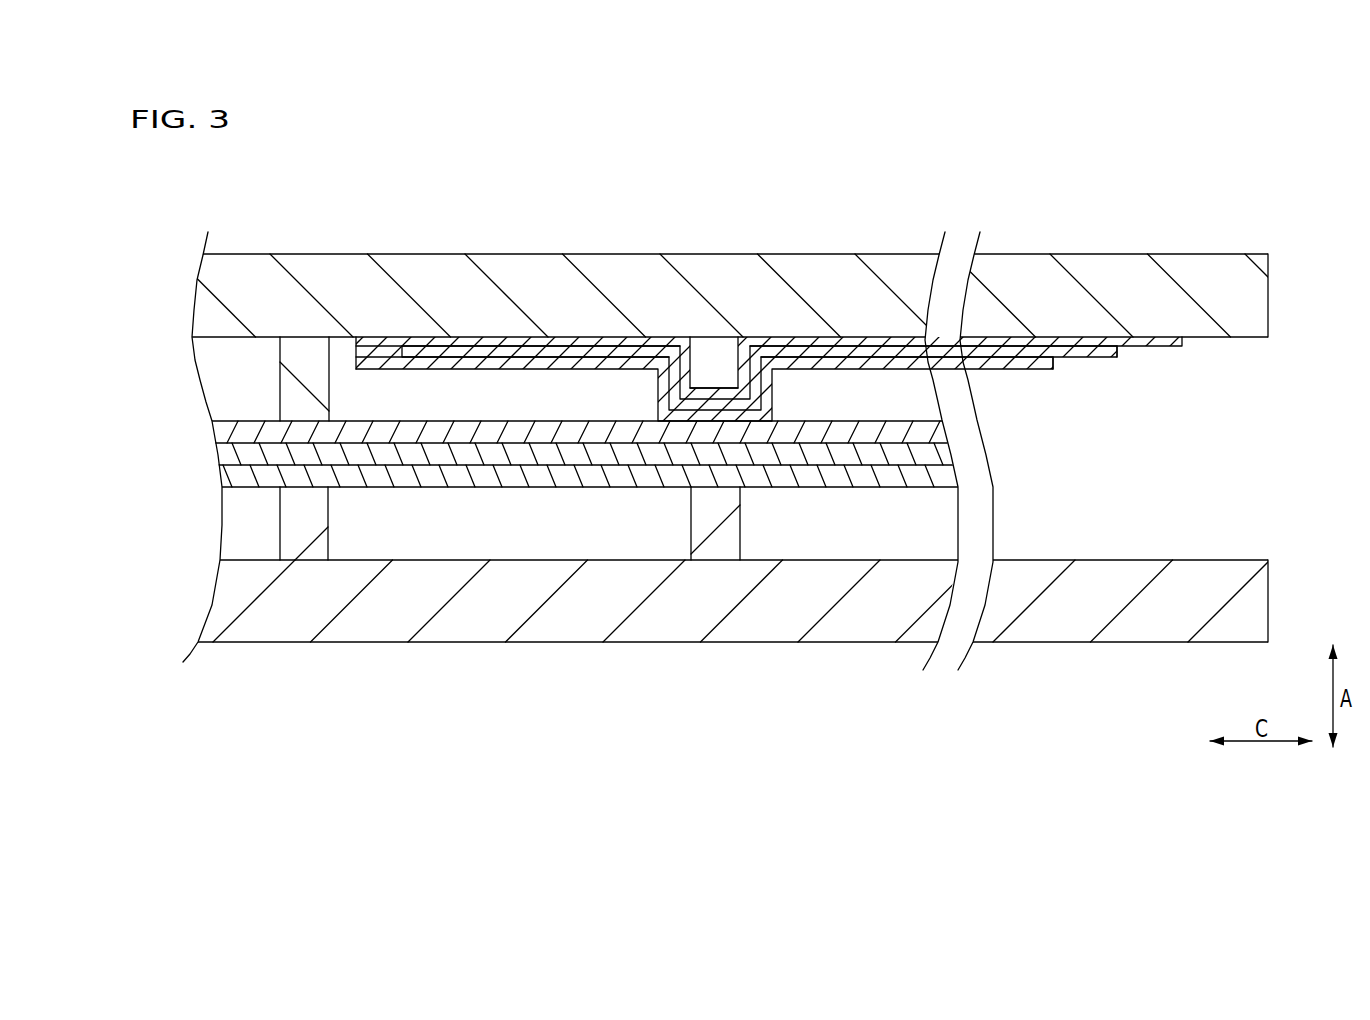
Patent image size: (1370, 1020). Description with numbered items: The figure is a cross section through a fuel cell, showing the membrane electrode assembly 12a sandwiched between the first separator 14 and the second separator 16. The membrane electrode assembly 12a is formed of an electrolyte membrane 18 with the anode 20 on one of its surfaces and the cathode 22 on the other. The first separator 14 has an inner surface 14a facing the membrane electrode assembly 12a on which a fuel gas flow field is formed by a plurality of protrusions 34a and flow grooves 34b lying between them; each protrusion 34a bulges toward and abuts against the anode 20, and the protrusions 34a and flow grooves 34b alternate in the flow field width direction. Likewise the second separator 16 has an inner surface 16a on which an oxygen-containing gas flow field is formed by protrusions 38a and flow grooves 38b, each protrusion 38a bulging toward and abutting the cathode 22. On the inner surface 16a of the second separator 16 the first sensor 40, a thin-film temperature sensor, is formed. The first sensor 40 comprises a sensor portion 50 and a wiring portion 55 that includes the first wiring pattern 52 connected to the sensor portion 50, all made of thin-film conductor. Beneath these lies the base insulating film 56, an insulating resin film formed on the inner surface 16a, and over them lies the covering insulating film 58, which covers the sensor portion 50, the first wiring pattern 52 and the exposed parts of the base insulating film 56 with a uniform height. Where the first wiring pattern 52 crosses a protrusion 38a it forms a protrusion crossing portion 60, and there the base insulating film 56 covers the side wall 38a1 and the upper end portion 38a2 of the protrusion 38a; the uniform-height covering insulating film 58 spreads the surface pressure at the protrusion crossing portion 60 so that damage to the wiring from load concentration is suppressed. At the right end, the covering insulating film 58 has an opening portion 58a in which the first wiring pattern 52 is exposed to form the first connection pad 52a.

The membrane electrode assembly 12a is at (523, 457).
The first separator 14 is at (571, 626).
The inner surface 14a is at (1222, 560).
The second separator 16 is at (563, 255).
The inner surface 16a is at (1242, 338).
The electrolyte membrane 18 is at (218, 455).
The anode 20 is at (220, 472).
The cathode 22 is at (217, 440).
The protrusion 34a is at (303, 524).
The flow groove 34b is at (460, 560).
The protrusion 38a is at (320, 394).
The side wall 38a1 is at (674, 375).
The upper end portion 38a2 is at (727, 392).
The flow groove 38b is at (253, 357).
The first sensor 40 is at (617, 330).
The sensor portion 50 is at (434, 353).
The first wiring pattern 52 is at (825, 352).
The first connection pad 52a is at (1100, 360).
The wiring portion 55 is at (788, 333).
The base insulating film 56 is at (873, 362).
The covering insulating film 58 is at (875, 364).
The opening portion 58a is at (1057, 365).
The protrusion crossing portion 60 is at (777, 398).